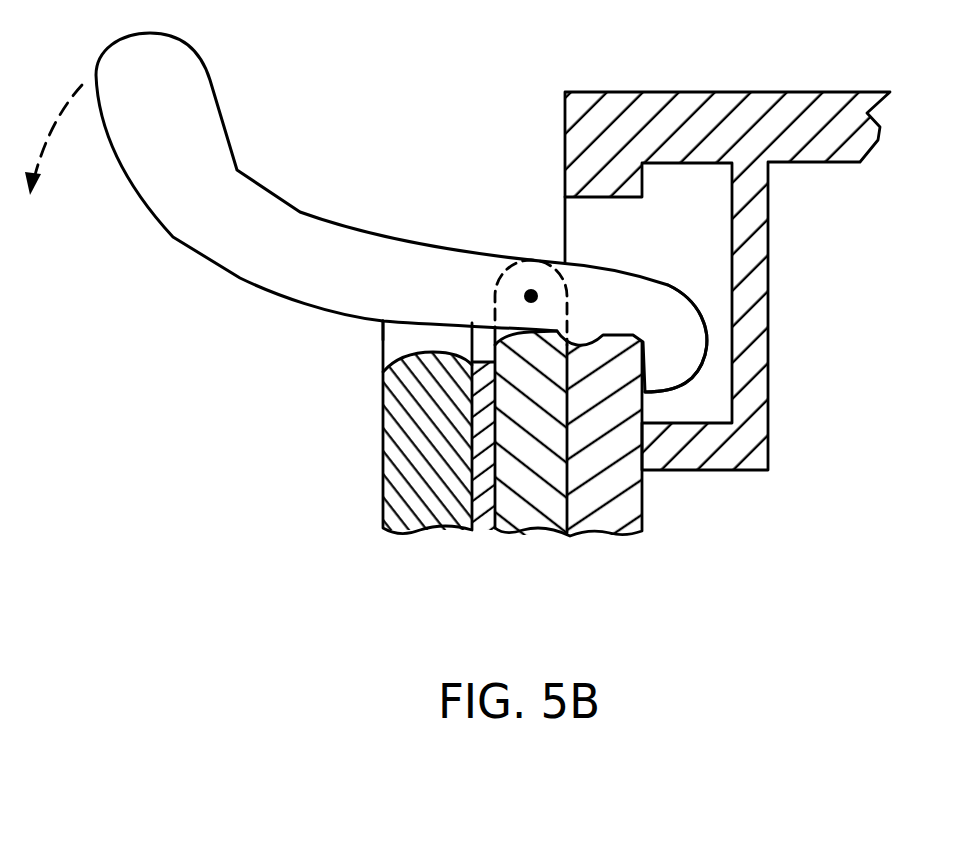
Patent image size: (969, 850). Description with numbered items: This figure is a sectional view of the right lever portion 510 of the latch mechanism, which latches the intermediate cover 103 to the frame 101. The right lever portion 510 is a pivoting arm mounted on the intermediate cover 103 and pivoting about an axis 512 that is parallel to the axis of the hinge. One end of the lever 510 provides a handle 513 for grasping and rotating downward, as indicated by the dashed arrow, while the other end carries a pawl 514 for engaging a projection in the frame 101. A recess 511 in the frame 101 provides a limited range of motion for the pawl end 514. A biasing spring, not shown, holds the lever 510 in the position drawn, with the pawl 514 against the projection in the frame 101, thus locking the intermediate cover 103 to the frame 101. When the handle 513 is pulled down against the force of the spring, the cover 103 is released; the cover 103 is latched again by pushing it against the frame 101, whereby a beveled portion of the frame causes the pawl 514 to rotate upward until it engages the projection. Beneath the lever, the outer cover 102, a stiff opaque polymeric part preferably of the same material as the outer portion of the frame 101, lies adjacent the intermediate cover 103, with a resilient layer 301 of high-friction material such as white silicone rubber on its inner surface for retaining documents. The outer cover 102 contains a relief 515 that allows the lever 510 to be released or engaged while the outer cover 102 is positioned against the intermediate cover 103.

The frame 101 is at (600, 125).
The outer cover 102 is at (410, 452).
The intermediate cover 103 is at (528, 515).
The resilient layer 301 is at (484, 522).
The right lever portion 510 is at (400, 180).
The recess 511 is at (697, 230).
The axis 512 is at (532, 290).
The handle 513 is at (134, 107).
The pawl 514 is at (640, 328).
The relief 515 is at (405, 336).